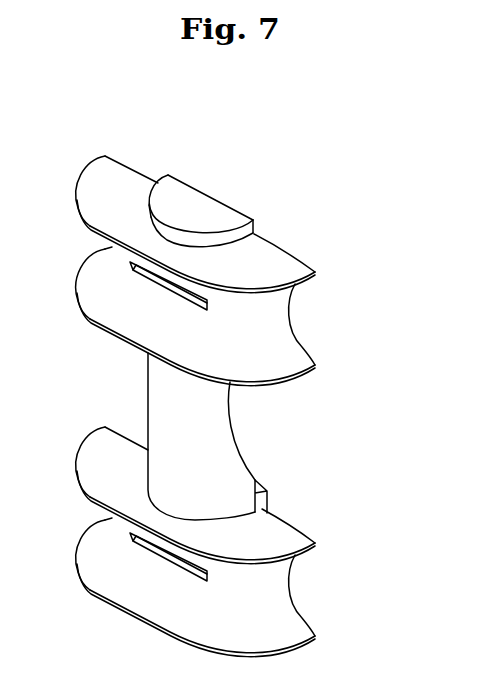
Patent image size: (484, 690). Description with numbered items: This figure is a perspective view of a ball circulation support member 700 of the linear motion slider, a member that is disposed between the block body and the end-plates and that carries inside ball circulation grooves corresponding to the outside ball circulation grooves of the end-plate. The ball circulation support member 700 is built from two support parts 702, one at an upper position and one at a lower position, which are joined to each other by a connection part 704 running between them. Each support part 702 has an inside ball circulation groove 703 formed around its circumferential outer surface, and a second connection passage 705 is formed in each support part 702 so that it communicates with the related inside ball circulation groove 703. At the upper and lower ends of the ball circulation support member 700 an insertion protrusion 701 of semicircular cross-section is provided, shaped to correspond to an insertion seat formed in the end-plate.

The ball circulation support member 700 is at (178, 113).
The insertion protrusion 701 is at (207, 202).
The support part 702 is at (278, 263).
The inside ball circulation groove 703 is at (277, 320).
The connection part 704 is at (207, 434).
The second connection passage 705 is at (168, 557).